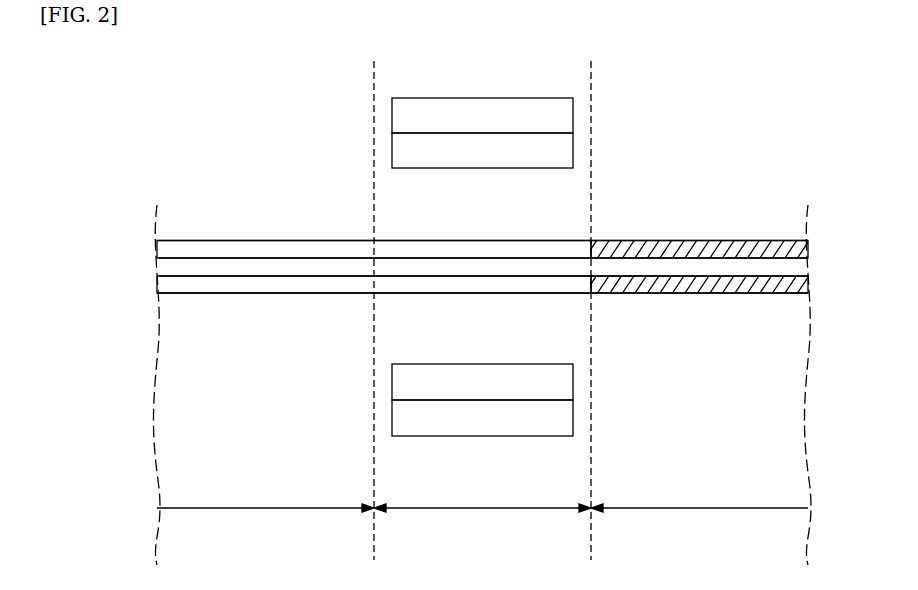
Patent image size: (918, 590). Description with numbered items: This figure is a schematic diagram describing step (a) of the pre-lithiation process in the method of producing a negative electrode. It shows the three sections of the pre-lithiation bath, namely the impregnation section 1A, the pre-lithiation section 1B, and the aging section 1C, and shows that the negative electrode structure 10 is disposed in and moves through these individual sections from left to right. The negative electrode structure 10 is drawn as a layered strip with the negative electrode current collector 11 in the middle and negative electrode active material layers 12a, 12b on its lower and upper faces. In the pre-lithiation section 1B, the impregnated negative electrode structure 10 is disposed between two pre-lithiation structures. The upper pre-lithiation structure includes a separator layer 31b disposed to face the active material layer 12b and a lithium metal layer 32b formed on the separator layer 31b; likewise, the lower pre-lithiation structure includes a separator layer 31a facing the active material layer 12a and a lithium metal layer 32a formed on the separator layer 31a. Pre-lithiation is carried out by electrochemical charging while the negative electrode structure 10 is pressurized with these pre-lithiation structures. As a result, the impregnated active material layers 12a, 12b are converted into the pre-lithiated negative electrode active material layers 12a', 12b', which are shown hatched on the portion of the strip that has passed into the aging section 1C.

The negative electrode structure 10 is at (260, 226).
The negative electrode current collector 11 is at (798, 266).
The negative electrode active material layer 12b is at (374, 223).
The pre-lithiated negative electrode active material layer 12b' is at (703, 222).
The negative electrode active material layer 12a is at (374, 311).
The pre-lithiated negative electrode active material layer 12a' is at (703, 310).
The lithium metal layer 32b is at (555, 113).
The separator layer 31b is at (555, 150).
The separator layer 31a is at (555, 382).
The lithium metal layer 32a is at (555, 417).
The impregnation section 1A is at (265, 498).
The pre-lithiation section 1B is at (482, 498).
The aging section 1C is at (699, 498).